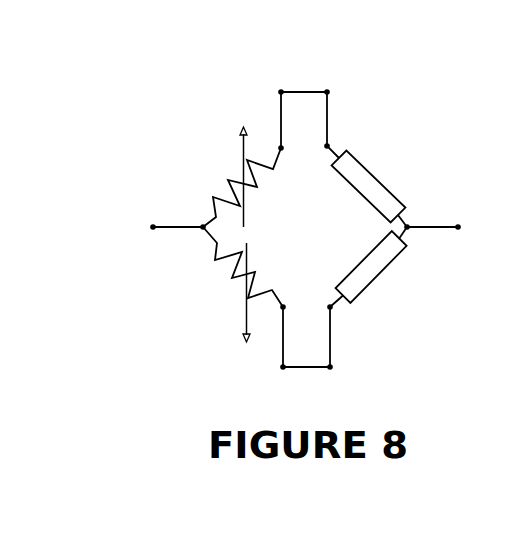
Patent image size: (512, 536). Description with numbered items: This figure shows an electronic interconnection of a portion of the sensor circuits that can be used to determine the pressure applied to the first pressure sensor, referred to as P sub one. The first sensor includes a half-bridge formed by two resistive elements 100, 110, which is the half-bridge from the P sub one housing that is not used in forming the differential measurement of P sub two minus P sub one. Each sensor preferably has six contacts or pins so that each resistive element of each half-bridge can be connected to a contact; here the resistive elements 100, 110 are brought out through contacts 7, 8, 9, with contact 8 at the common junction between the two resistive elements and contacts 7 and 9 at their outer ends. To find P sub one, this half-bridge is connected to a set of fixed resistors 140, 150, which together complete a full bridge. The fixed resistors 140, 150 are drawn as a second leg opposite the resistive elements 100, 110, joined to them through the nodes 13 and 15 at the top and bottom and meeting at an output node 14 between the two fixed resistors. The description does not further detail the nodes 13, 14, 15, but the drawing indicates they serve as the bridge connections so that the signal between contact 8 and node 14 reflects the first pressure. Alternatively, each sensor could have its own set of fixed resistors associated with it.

The contact 7 is at (302, 108).
The contact 8 is at (170, 229).
The contact 9 is at (304, 352).
The terminal 13 is at (333, 112).
The output terminal 14 is at (446, 229).
The terminal 15 is at (340, 349).
The resistive element 100 is at (227, 188).
The resistive element 110 is at (222, 273).
The fixed resistor 140 is at (377, 177).
The fixed resistor 150 is at (380, 272).